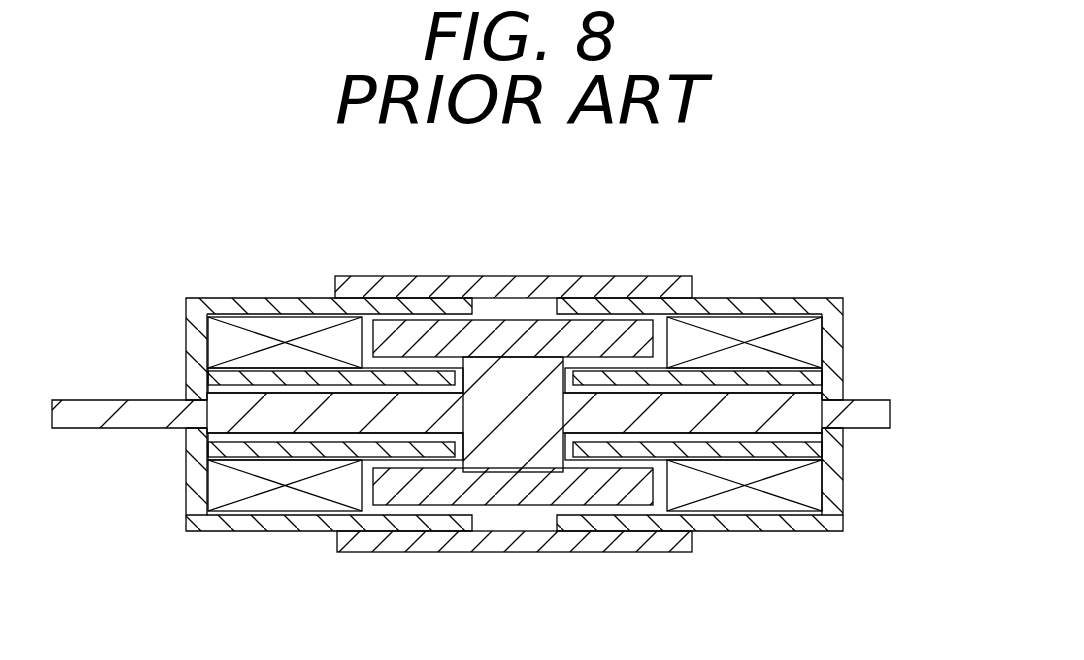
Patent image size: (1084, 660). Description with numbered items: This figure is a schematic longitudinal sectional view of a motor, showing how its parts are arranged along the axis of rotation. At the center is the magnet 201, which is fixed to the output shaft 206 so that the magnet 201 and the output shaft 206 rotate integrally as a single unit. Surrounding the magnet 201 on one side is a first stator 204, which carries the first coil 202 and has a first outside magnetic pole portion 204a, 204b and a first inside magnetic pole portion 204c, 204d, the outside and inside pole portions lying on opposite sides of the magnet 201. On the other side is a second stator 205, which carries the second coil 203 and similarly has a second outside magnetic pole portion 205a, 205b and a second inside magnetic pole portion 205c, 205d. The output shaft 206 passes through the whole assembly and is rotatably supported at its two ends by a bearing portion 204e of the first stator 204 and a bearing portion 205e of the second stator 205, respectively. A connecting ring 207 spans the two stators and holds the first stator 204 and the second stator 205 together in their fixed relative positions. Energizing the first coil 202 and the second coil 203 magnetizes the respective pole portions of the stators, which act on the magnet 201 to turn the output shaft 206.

The magnet 201 is at (528, 485).
The first coil 202 is at (273, 503).
The second coil 203 is at (748, 495).
The first stator 204 is at (290, 435).
The first outside magnetic pole portion 204a is at (422, 303).
The first outside magnetic pole portion 204b is at (442, 523).
The first inside magnetic pole portion 204c is at (390, 377).
The first inside magnetic pole portion 204d is at (407, 452).
The bearing portion 204e is at (187, 465).
The second stator 205 is at (746, 419).
The second outside magnetic pole portion 205a is at (580, 303).
The second outside magnetic pole portion 205b is at (647, 520).
The second inside magnetic pole portion 205c is at (602, 373).
The second inside magnetic pole portion 205d is at (610, 448).
The bearing portion 205e is at (843, 392).
The output shaft 206 is at (90, 418).
The connecting ring 207 is at (490, 285).